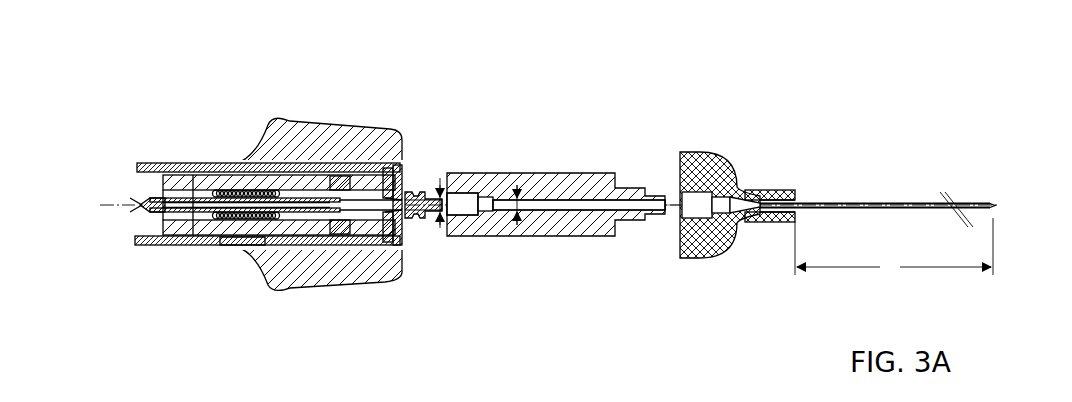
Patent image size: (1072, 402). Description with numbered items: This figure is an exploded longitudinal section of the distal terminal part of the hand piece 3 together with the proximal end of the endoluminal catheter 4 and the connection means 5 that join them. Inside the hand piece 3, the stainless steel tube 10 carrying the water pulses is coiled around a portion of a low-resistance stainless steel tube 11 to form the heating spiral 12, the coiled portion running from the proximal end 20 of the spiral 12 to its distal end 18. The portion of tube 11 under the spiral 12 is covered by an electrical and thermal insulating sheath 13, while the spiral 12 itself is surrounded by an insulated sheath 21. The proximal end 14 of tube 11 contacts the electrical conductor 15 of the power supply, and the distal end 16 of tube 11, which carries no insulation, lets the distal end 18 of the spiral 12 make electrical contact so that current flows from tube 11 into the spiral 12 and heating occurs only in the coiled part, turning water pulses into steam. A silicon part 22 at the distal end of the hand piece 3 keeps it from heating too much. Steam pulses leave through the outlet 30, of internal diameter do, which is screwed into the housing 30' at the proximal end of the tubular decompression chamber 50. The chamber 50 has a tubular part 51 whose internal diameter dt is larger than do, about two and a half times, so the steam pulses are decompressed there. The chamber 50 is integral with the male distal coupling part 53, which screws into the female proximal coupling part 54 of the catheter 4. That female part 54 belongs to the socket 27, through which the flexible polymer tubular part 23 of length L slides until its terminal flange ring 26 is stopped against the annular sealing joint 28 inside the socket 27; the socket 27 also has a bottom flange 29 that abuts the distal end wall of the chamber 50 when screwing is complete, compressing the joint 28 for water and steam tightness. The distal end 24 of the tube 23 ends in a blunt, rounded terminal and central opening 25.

The hand piece 3 is at (290, 105).
The endoluminal catheter 4 is at (737, 160).
The connection means 5 is at (793, 298).
The distal coupling part 53 is at (662, 240).
The proximal coupling part 54 is at (795, 272).
The tube 10 is at (195, 190).
The stainless steel tube 11 is at (197, 212).
The spiral 12 is at (255, 185).
The insulating sheath 13 is at (163, 236).
The proximal end 14 is at (160, 210).
The electrical conductor 15 is at (140, 203).
The distal end 16 is at (398, 165).
The distal end of the spiral 18 is at (355, 175).
The proximal end of the spiral 20 is at (162, 182).
The sheath 21 is at (243, 238).
The silicon part 22 is at (355, 285).
The tubular part 23 is at (915, 210).
The distal end 24 is at (995, 200).
The terminal and central opening 25 is at (998, 208).
The flange ring 26 is at (745, 222).
The socket 27 is at (700, 152).
The annular sealing joint 28 is at (740, 190).
The bottom flange 29 is at (668, 250).
The outlet 30 is at (427, 184).
The housing 30' is at (478, 178).
The tubular decompression chamber 50 is at (588, 170).
The tubular part 51 is at (565, 200).
The internal diameter of the hand piece outlet do is at (452, 215).
The internal diameter of the tubular part dt is at (520, 215).
The length L is at (894, 246).